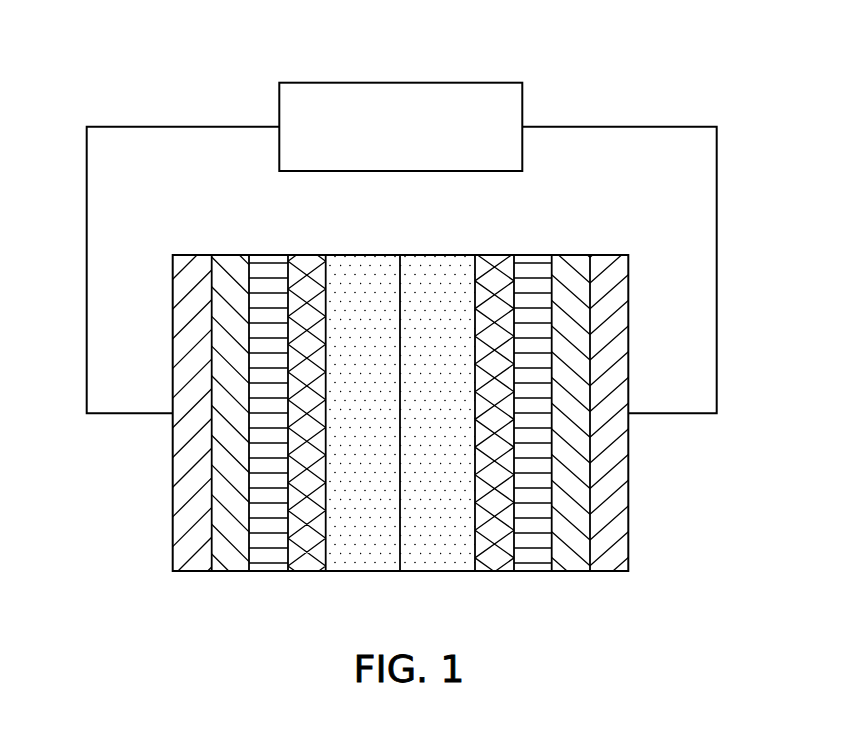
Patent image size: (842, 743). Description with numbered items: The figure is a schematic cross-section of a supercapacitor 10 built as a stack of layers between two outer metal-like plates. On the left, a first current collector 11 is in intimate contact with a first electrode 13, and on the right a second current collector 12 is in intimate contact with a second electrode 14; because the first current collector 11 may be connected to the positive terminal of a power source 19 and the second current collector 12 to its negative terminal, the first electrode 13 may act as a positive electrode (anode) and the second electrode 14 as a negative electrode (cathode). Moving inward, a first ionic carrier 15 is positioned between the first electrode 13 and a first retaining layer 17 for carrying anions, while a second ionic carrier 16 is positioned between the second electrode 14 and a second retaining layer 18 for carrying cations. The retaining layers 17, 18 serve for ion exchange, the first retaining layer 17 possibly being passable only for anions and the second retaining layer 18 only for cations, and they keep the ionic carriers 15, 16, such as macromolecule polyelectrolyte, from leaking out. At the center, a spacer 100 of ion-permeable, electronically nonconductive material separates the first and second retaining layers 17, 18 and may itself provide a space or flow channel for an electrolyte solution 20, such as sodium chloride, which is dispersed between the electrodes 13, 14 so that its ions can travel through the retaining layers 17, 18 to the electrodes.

The supercapacitor 10 is at (122, 482).
The first current collector 11 is at (190, 262).
The second current collector 12 is at (613, 562).
The first electrode 13 is at (233, 562).
The second electrode 14 is at (568, 262).
The first ionic carrier 15 is at (267, 262).
The second ionic carrier 16 is at (537, 562).
The first retaining layer 17 is at (309, 562).
The second retaining layer 18 is at (492, 262).
The power source 19 is at (500, 82).
The electrolyte solution 20 is at (362, 562).
The spacer 100 is at (402, 555).